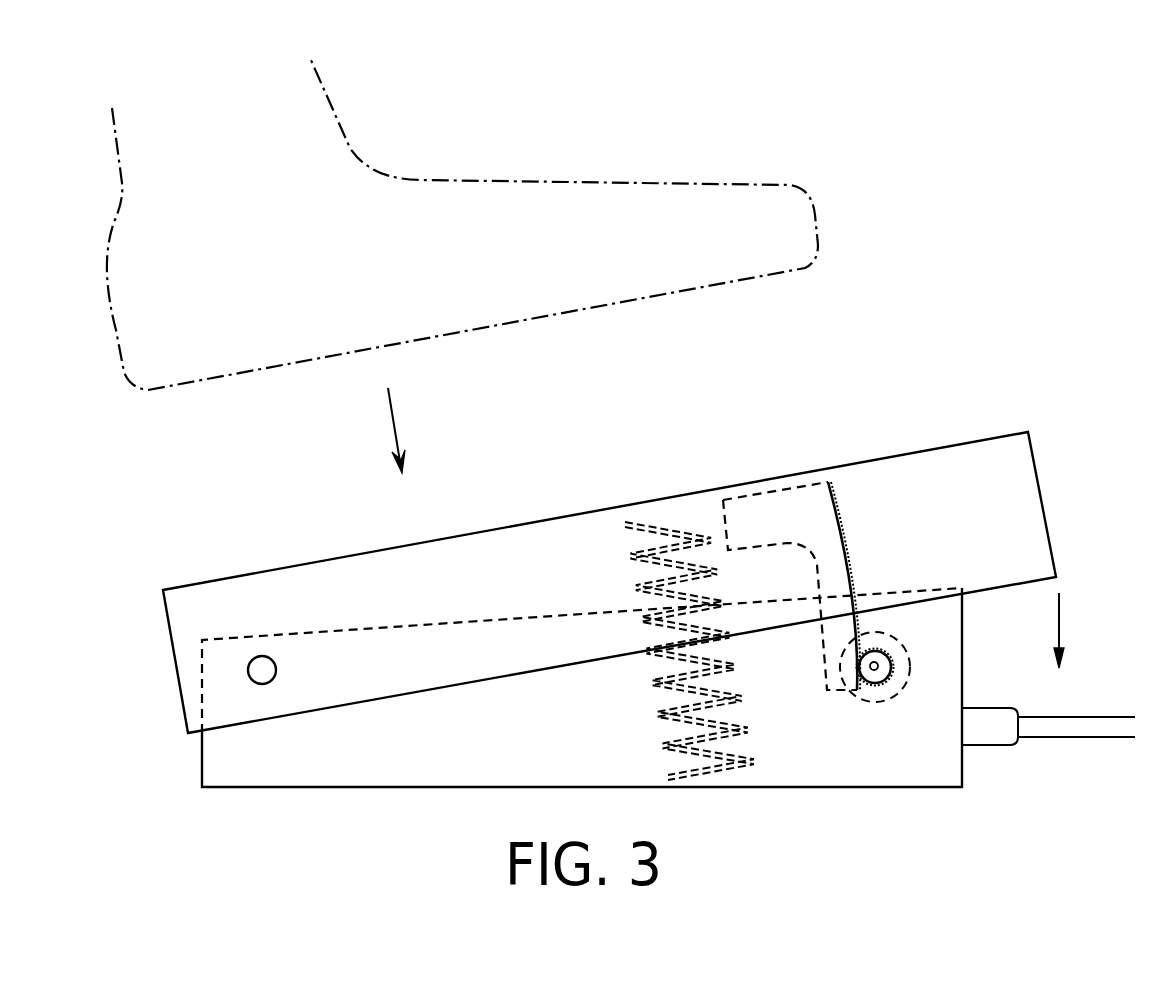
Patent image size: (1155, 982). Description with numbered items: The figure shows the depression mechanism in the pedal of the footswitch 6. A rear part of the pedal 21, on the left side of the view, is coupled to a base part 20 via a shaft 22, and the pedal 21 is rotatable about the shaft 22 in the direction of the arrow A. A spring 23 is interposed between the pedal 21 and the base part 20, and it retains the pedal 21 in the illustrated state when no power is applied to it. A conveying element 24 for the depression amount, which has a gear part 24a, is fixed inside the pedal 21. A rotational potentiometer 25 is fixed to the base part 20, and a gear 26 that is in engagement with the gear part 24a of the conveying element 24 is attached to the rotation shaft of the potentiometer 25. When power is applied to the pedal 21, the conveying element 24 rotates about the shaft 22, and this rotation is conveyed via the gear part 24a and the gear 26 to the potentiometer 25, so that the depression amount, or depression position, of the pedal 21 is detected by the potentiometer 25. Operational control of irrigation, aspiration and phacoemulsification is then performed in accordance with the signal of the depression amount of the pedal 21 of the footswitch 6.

The footswitch 6 is at (1085, 494).
The base part 20 is at (930, 760).
The pedal 21 is at (203, 595).
The shaft 22 is at (260, 671).
The spring 23 is at (672, 713).
The conveying element 24 is at (800, 507).
The gear part 24a is at (852, 562).
The rotational potentiometer 25 is at (910, 670).
The gear 26 is at (875, 682).